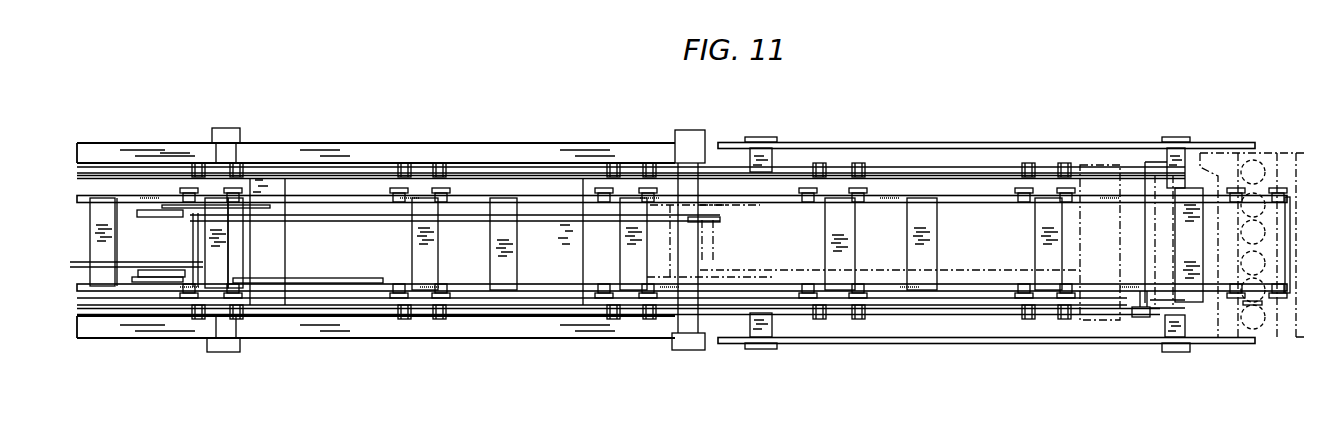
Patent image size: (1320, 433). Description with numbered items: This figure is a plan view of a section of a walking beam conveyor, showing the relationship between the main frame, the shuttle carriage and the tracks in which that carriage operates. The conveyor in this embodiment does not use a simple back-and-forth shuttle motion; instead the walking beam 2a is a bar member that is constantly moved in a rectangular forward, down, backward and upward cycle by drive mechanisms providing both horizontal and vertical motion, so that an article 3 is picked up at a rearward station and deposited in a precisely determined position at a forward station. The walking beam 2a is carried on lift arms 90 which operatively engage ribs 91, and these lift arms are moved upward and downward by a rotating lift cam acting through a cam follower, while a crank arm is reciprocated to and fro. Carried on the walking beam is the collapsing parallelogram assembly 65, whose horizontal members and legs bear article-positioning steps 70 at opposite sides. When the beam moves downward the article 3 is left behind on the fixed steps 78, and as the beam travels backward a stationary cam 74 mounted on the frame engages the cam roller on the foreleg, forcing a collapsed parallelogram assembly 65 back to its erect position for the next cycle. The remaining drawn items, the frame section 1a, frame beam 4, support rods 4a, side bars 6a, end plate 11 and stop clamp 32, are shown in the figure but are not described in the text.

The frame section 1a is at (460, 332).
The walking beam 2a is at (132, 208).
The article 3 is at (1283, 156).
The frame beam 4 is at (112, 308).
The support rods 4a is at (999, 177).
The side bars 6a is at (912, 142).
The end plate 11 is at (1283, 252).
The stop clamp 32 is at (1140, 318).
The collapsing parallelogram assembly 65 is at (1230, 298).
The article-positioning steps 70 is at (862, 203).
The stationary cam 74 is at (1252, 307).
The fixed steps 78 is at (437, 163).
The lift arms 90 is at (164, 270).
The ribs 91 is at (140, 211).